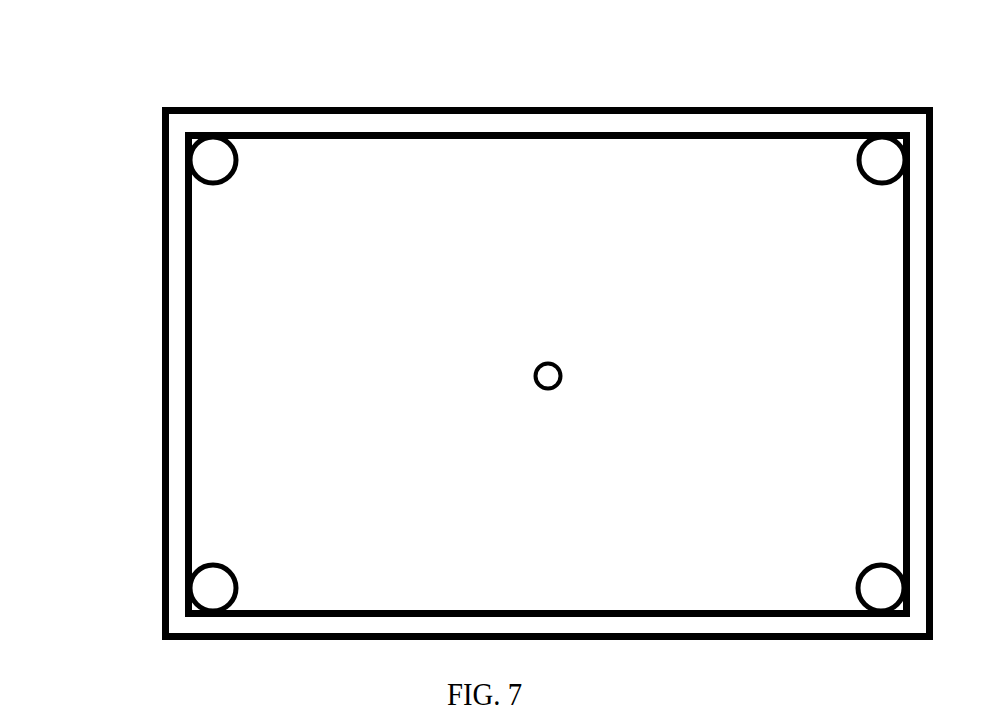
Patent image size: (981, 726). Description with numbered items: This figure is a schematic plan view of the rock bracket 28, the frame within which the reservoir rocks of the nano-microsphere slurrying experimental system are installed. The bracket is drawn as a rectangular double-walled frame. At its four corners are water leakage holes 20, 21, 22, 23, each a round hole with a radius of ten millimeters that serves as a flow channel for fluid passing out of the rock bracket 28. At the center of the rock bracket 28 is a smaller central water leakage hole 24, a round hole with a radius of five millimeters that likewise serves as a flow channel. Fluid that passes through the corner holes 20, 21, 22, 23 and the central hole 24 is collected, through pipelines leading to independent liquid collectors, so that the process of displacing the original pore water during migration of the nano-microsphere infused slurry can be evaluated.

The water leakage hole 20 is at (138, 108).
The water leakage hole 21 is at (806, 108).
The water leakage hole 22 is at (136, 554).
The water leakage hole 23 is at (814, 559).
The central water leakage hole 24 is at (550, 377).
The rock bracket 28 is at (175, 279).